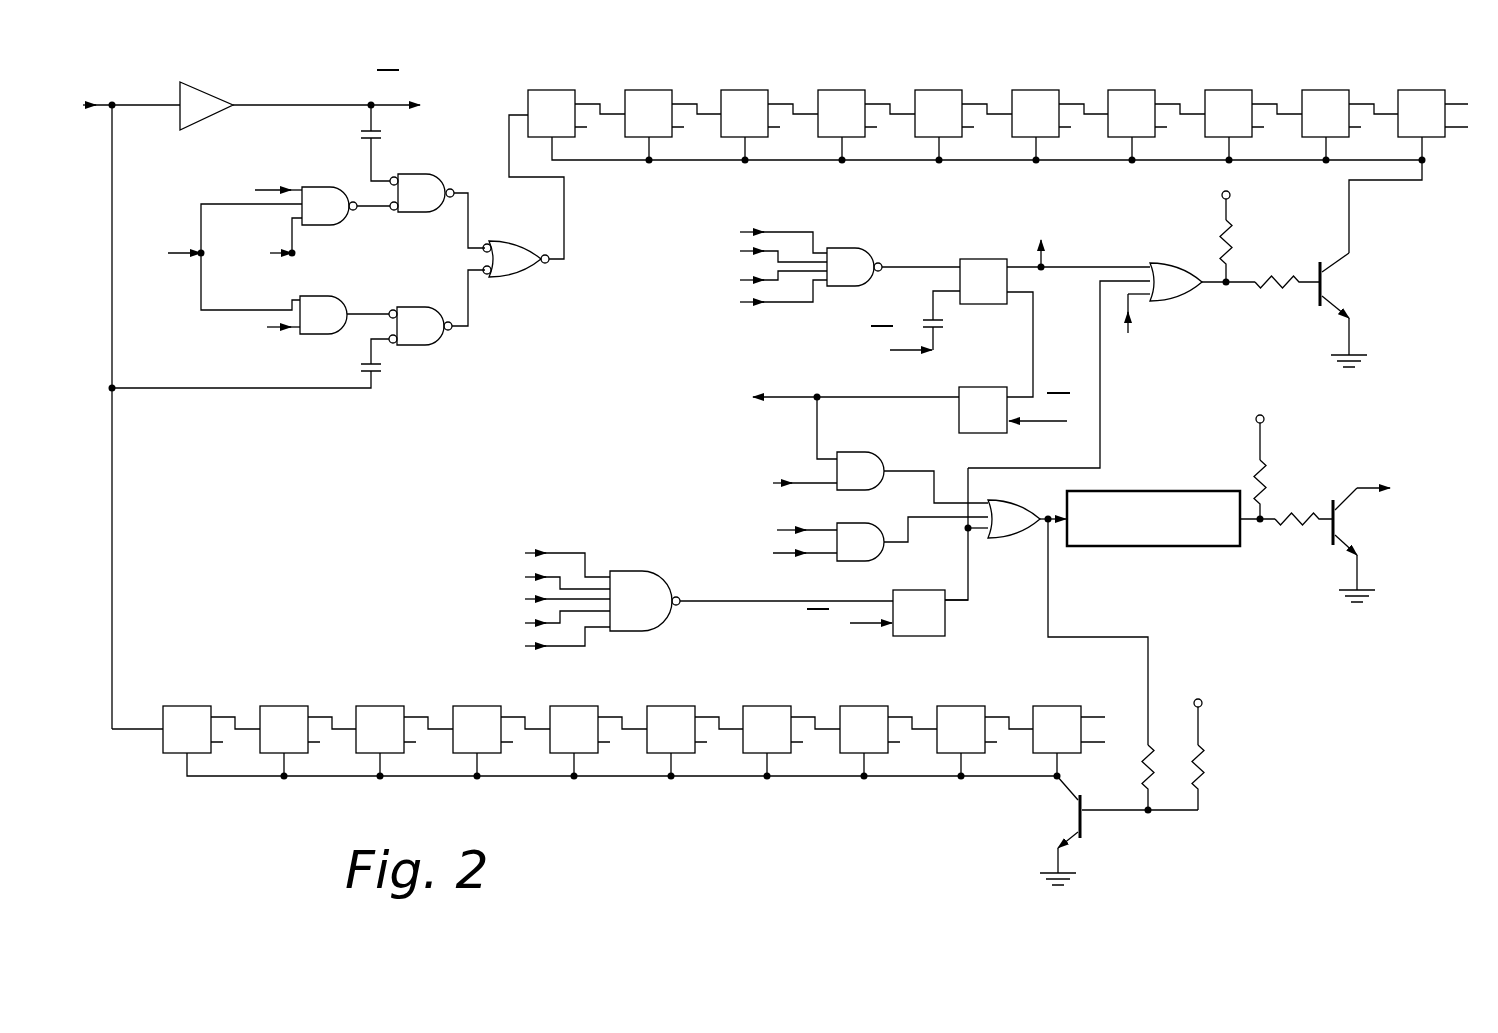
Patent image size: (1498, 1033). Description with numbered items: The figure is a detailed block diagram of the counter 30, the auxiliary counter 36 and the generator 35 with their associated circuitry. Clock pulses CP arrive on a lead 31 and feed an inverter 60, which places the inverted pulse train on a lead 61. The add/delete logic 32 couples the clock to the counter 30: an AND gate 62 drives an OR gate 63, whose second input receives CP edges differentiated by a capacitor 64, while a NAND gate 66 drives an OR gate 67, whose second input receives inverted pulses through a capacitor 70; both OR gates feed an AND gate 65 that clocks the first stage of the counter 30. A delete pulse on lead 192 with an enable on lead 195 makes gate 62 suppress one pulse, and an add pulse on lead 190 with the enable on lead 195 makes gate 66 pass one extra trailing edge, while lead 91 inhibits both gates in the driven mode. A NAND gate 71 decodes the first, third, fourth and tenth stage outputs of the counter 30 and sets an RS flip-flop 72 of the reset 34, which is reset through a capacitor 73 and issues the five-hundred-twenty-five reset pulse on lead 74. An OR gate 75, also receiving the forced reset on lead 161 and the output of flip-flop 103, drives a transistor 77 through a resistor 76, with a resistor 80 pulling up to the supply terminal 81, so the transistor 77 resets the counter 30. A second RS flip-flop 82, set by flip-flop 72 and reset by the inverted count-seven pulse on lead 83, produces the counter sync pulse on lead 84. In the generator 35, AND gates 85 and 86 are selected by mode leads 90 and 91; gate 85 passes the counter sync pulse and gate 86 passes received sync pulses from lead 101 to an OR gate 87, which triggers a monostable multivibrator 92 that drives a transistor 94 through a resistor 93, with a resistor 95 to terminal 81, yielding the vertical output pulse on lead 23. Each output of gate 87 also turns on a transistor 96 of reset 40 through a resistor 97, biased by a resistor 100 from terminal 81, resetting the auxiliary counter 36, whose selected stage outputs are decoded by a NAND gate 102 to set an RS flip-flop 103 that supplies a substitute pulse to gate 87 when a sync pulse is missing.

The lead 23 is at (1372, 488).
The counter 30 is at (687, 178).
The lead 31 is at (92, 112).
The add/delete logic 32 is at (262, 400).
The reset 34 is at (1198, 255).
The generator 35 is at (1207, 555).
The auxiliary counter 36 is at (272, 690).
The reset 40 is at (1035, 808).
The inverter 60 is at (206, 94).
The lead 61 is at (410, 104).
The AND gate 62 is at (320, 296).
The OR gate 63 is at (410, 307).
The capacitor 64 is at (374, 370).
The AND gate 65 is at (500, 242).
The NAND gate 66 is at (320, 187).
The OR gate 67 is at (438, 174).
The capacitor 70 is at (383, 136).
The NAND gate 71 is at (840, 248).
The RS flip-flop 72 is at (965, 259).
The capacitor 73 is at (925, 320).
The lead 74 is at (1041, 242).
The OR gate 75 is at (1148, 263).
The resistor 76 is at (1268, 280).
The transistor 77 is at (1349, 297).
The resistor 80 is at (1232, 243).
The terminal 81 is at (1212, 195).
The RS flip-flop 82 is at (960, 387).
The lead 83 is at (1048, 425).
The lead 84 is at (765, 397).
The AND gate 85 is at (845, 453).
The AND gate 86 is at (857, 523).
The OR gate 87 is at (1008, 502).
The lead 90 is at (790, 483).
The lead 91 is at (293, 253).
The monostable multivibrator 92 is at (1158, 491).
The resistor 93 is at (1288, 518).
The transistor 94 is at (1358, 535).
The resistor 95 is at (1265, 488).
The transistor 96 is at (1070, 824).
The resistor 97 is at (1152, 770).
The resistor 100 is at (1204, 780).
The lead 101 is at (802, 553).
The NAND gate 102 is at (612, 571).
The RS flip-flop 103 is at (895, 590).
The lead 161 is at (1128, 319).
The lead 190 is at (277, 188).
The lead 192 is at (284, 329).
The lead 195 is at (202, 252).